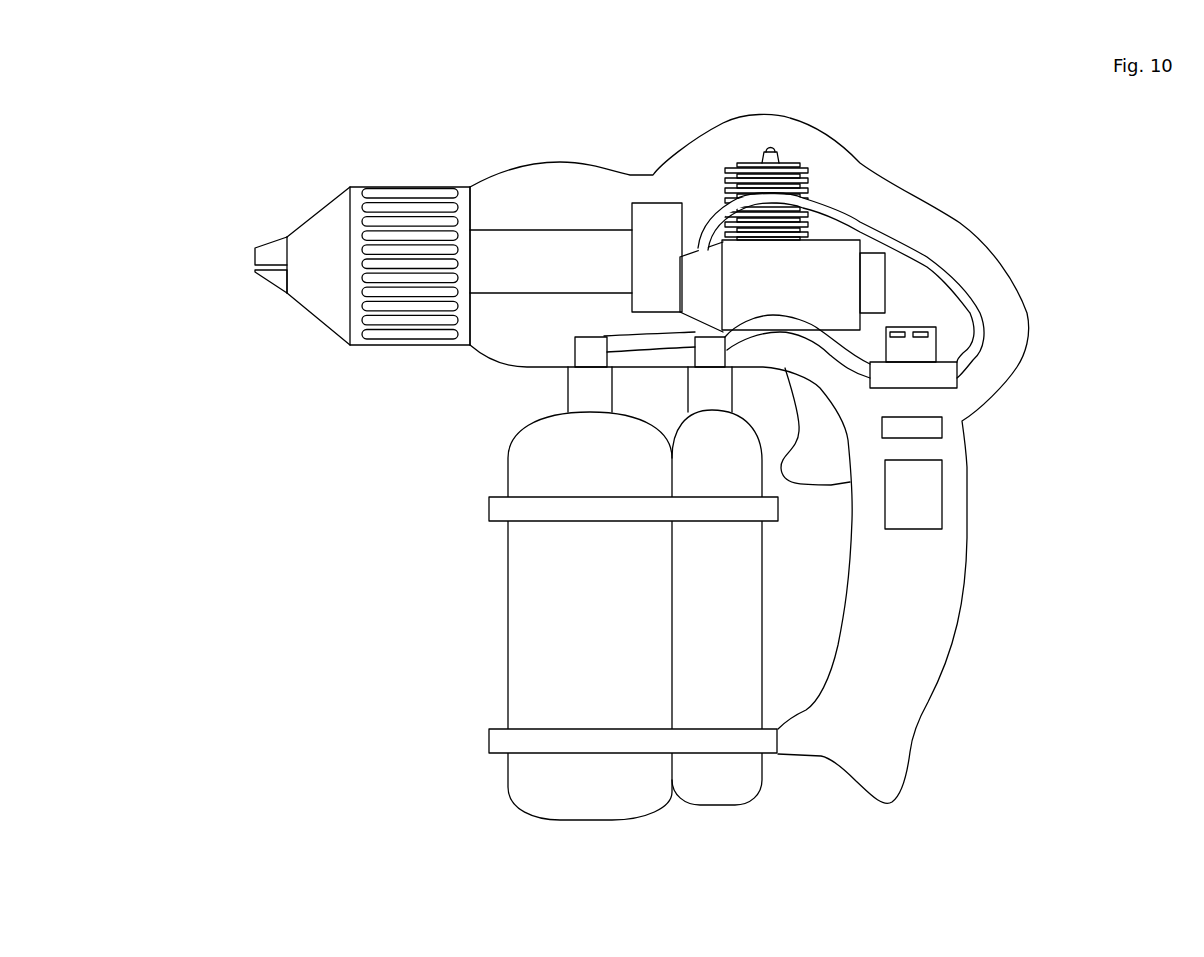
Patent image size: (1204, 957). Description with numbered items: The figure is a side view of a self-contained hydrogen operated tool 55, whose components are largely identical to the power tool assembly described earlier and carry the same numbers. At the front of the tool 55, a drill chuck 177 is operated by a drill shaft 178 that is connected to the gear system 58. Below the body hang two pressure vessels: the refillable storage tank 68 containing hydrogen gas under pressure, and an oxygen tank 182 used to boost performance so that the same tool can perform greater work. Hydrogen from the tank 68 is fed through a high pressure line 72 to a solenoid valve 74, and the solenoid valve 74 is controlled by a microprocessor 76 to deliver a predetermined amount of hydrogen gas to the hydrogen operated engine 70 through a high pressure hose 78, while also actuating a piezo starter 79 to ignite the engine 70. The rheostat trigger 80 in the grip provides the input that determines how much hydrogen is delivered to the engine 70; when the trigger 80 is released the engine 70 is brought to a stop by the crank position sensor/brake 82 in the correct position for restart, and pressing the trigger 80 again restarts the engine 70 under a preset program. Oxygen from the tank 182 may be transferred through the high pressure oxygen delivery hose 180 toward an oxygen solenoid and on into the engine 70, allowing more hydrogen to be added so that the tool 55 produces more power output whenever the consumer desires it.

The self-contained hydrogen operated tool 55 is at (913, 686).
The gear system 58 is at (636, 203).
The refillable storage tank 68 is at (545, 787).
The hydrogen operated engine 70 is at (787, 163).
The high pressure line 72 is at (622, 343).
The solenoid valve 74 is at (960, 362).
The microprocessor 76 is at (928, 508).
The high pressure hose 78 is at (960, 288).
The piezo starter 79 is at (932, 428).
The rheostat trigger 80 is at (824, 474).
The crank position sensor/brake 82 is at (870, 268).
The drill chuck 177 is at (287, 237).
The drill shaft 178 is at (509, 257).
The high pressure oxygen delivery hose 180 is at (782, 325).
The oxygen tank 182 is at (730, 783).